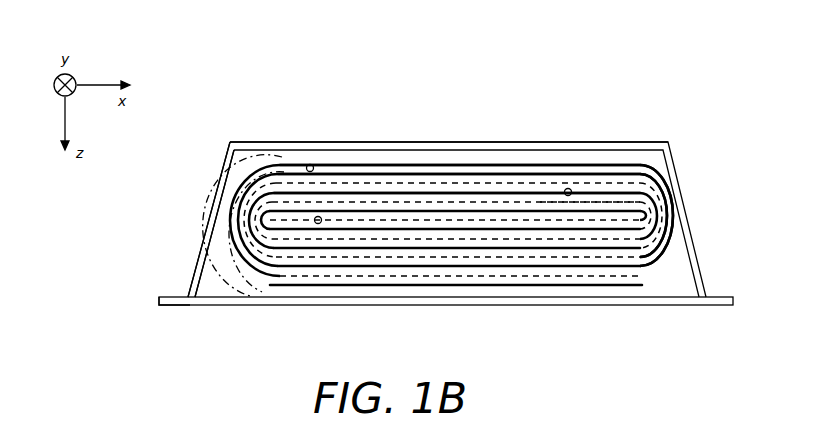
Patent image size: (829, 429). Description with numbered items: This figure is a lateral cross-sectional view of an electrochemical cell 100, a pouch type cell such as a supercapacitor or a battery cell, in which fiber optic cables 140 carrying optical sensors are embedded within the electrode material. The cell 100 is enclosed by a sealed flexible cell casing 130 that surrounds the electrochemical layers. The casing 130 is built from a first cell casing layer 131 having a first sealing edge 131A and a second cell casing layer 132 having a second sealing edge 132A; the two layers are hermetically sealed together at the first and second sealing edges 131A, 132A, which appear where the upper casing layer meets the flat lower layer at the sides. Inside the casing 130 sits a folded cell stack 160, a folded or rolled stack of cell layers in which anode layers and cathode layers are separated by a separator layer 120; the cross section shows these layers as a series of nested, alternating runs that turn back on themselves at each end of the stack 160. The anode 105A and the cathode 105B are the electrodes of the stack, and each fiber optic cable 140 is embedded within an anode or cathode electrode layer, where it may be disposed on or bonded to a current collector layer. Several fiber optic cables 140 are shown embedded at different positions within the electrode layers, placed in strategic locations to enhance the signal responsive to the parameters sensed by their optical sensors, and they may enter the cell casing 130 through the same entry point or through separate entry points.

The electrochemical cell 100 is at (620, 104).
The anode 105A is at (375, 320).
The cathode 105B is at (590, 197).
The separator layer 120 is at (253, 252).
The cell casing 130 is at (218, 159).
The first cell casing layer 131 is at (270, 145).
The first sealing edge 131A is at (173, 294).
The second cell casing layer 132 is at (237, 306).
The second sealing edge 132A is at (170, 306).
The fiber optic cable 140 is at (552, 191).
The folded cell stack 160 is at (672, 168).